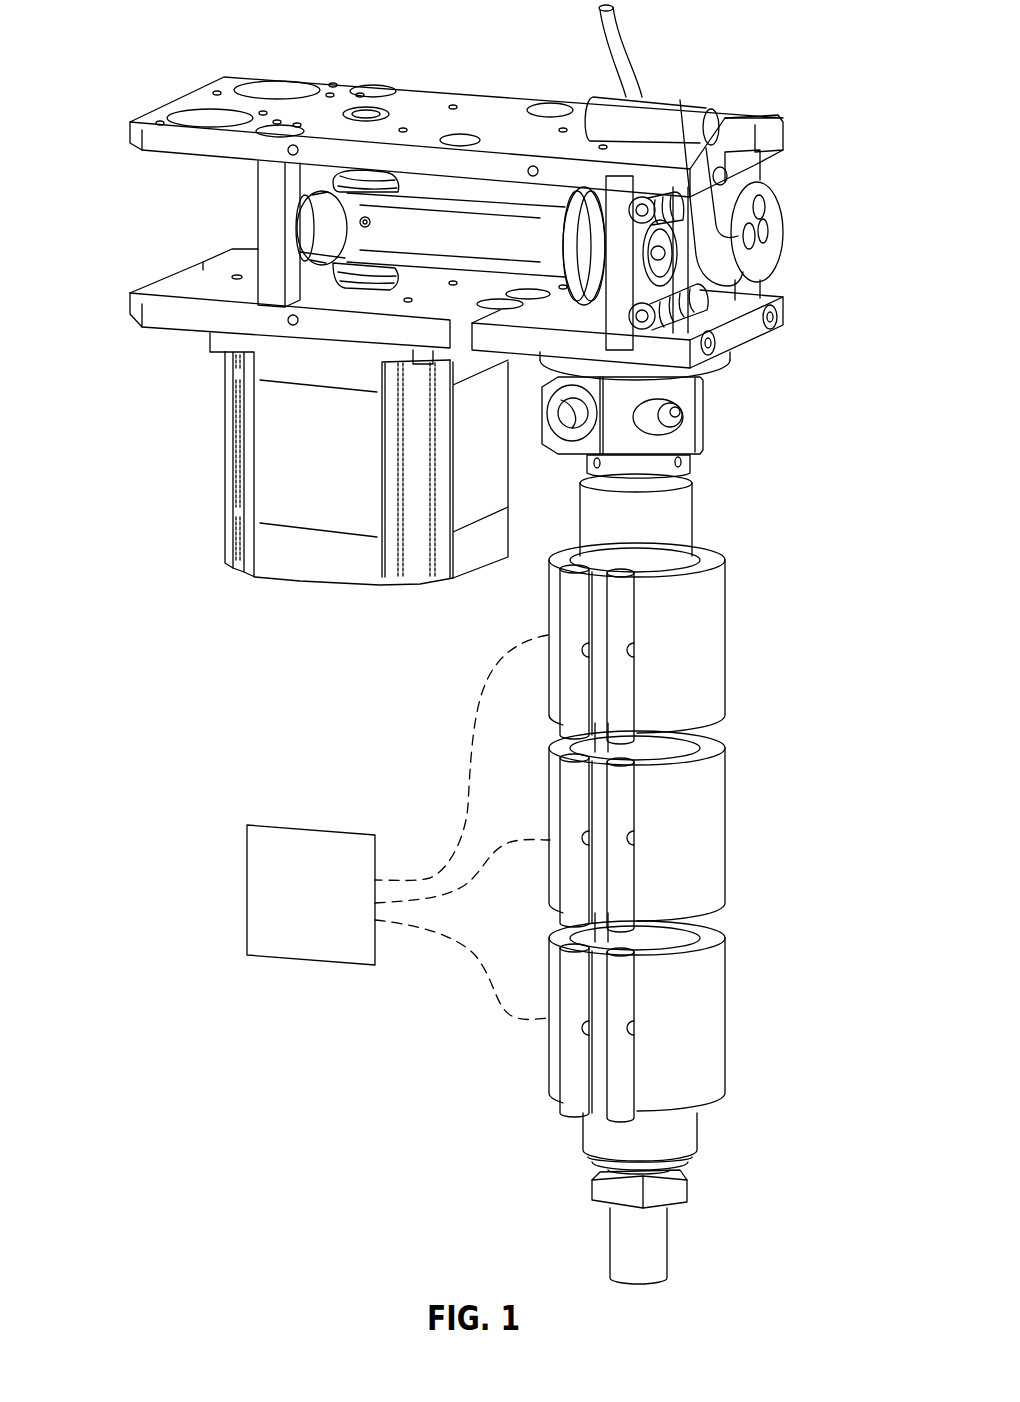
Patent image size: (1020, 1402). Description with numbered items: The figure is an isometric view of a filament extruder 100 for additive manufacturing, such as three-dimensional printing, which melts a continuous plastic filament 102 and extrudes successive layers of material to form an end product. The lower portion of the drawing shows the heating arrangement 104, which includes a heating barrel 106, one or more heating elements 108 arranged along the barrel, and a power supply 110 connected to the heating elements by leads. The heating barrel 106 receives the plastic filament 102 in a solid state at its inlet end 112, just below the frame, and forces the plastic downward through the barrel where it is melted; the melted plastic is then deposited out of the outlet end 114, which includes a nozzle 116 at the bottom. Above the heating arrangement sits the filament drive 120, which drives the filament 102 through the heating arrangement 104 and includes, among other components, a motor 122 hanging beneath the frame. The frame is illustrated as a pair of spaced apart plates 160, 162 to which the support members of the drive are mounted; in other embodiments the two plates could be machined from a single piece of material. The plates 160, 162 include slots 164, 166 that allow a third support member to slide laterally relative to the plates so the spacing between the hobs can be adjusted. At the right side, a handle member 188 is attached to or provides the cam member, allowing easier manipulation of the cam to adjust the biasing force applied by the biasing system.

The filament extruder 100 is at (122, 274).
The plastic filament 102 is at (625, 48).
The heating arrangement 104 is at (848, 1133).
The heating barrel 106 is at (685, 510).
The heating elements 108 is at (728, 648).
The power supply 110 is at (248, 846).
The inlet end 112 is at (724, 393).
The outlet end 114 is at (716, 1202).
The nozzle 116 is at (655, 1258).
The filament drive 120 is at (136, 578).
The motor 122 is at (275, 577).
The plate 160 is at (165, 317).
The plate 162 is at (190, 140).
The slot 164 is at (617, 362).
The slot 166 is at (632, 164).
The handle member 188 is at (780, 235).